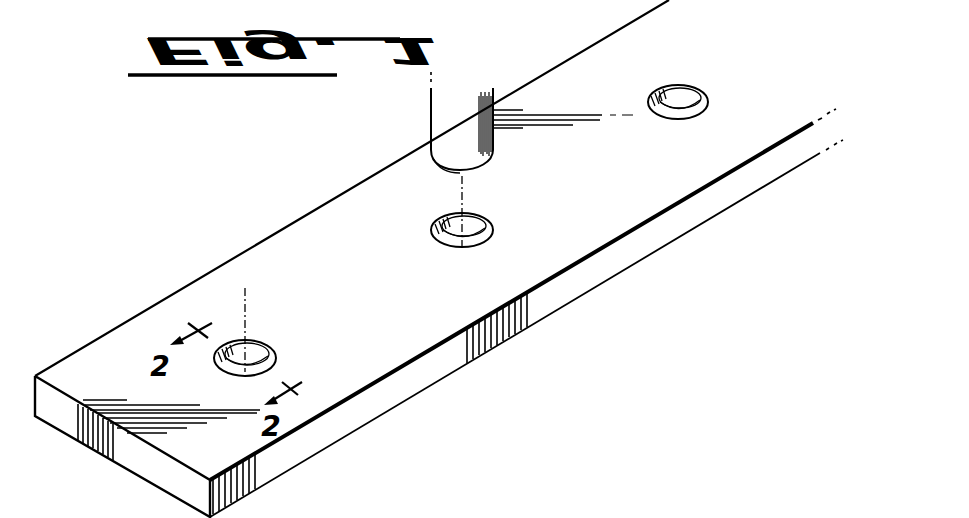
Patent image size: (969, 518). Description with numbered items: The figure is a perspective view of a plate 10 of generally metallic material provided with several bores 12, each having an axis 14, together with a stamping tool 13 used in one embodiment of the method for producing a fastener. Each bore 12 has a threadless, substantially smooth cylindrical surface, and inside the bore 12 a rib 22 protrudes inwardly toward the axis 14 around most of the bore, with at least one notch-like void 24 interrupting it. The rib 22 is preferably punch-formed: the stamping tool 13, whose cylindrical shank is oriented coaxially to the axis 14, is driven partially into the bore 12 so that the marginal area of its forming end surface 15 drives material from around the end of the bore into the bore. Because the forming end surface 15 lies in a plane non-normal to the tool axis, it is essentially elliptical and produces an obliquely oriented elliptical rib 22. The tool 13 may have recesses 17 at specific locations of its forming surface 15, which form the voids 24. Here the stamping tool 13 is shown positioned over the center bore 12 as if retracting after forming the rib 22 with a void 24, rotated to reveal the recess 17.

The plate 10 is at (324, 233).
The bore 12 is at (272, 343).
The stamping tool 13 is at (492, 102).
The axis 14 is at (243, 288).
The forming end surface 15 is at (428, 170).
The recess 17 is at (466, 168).
The rib 22 is at (433, 226).
The void 24 is at (268, 360).